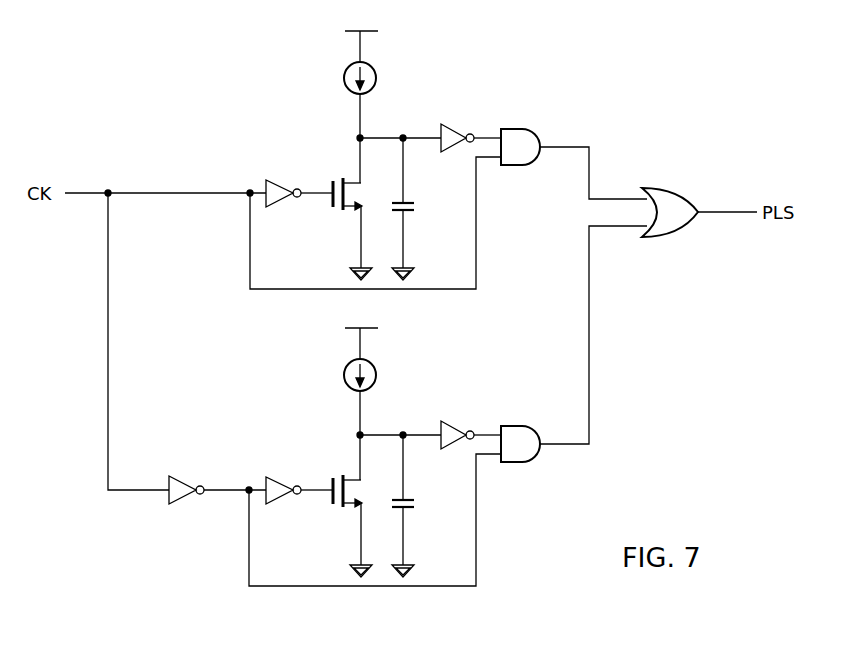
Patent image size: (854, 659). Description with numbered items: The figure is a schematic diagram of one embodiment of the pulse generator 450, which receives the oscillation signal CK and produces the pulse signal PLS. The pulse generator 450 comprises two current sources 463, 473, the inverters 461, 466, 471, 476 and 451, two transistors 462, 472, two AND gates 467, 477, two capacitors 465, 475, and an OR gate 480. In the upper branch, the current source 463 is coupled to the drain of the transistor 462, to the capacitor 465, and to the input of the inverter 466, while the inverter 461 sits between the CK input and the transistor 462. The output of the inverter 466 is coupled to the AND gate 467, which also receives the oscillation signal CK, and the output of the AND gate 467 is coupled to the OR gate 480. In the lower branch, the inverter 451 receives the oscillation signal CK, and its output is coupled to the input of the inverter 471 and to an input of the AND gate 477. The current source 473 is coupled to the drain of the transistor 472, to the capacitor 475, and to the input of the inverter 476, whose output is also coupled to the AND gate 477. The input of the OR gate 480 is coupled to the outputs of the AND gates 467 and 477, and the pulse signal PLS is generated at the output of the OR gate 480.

The pulse generator 450 is at (788, 106).
The inverter 451 is at (188, 473).
The inverter 461 is at (285, 183).
The transistor 462 is at (340, 217).
The current source 463 is at (377, 70).
The capacitor 465 is at (416, 211).
The inverter 466 is at (460, 126).
The AND gate 467 is at (523, 126).
The inverter 471 is at (285, 480).
The transistor 472 is at (340, 514).
The current source 473 is at (375, 361).
The capacitor 475 is at (416, 512).
The inverter 476 is at (450, 422).
The AND gate 477 is at (523, 423).
The OR gate 480 is at (650, 240).